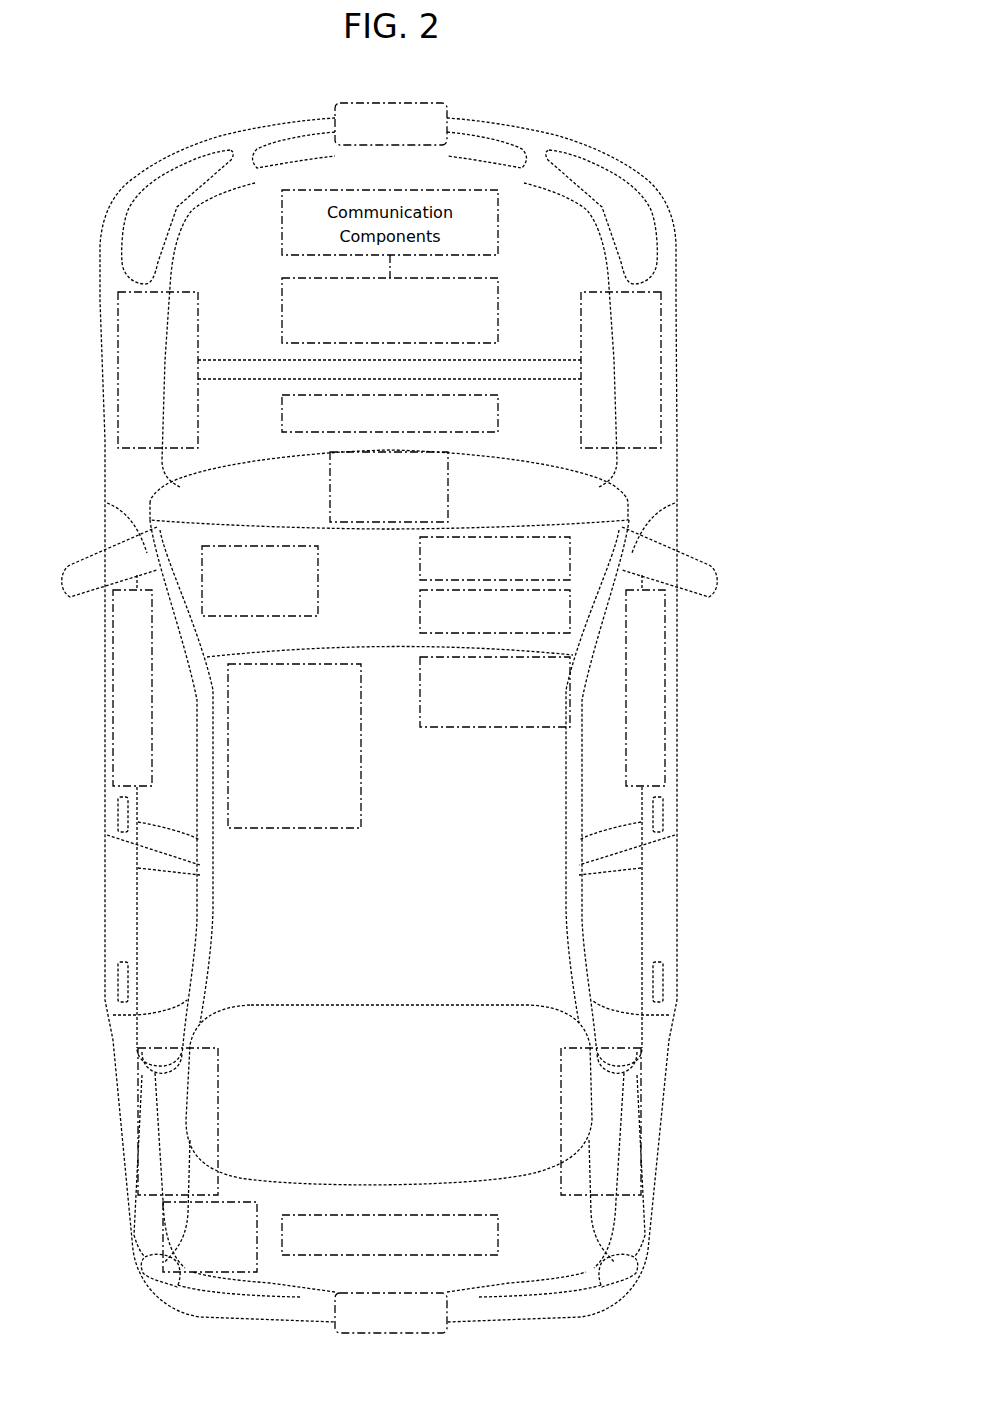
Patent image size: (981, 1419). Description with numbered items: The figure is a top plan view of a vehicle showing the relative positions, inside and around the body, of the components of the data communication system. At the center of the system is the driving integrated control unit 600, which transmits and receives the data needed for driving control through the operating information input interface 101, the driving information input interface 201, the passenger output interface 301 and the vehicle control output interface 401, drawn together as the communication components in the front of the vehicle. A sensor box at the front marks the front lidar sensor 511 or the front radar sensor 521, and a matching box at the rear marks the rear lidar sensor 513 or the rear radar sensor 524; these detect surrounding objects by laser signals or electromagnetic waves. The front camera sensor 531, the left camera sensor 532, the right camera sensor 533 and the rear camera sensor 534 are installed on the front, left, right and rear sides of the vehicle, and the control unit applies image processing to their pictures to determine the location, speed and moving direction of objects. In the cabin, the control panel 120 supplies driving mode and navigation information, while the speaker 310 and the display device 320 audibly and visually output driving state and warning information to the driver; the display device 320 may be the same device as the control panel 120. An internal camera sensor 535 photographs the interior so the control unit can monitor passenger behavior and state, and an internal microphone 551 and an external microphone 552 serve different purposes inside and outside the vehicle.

The operating information input interface 101 is at (390, 698).
The driving information input interface 201 is at (390, 698).
The passenger output interface 301 is at (390, 698).
The vehicle control output interface 401 is at (503, 218).
The front lidar sensor 511 is at (391, 96).
The front radar sensor 521 is at (390, 100).
The rear lidar sensor 513 is at (391, 1337).
The rear radar sensor 524 is at (390, 1335).
The driving integrated control unit 600 is at (498, 312).
The front camera sensor 531 is at (498, 413).
The control panel 120 is at (448, 490).
The internal camera sensor 535 is at (203, 562).
The speaker 310 is at (418, 559).
The display device 320 is at (418, 612).
The internal microphone 551 is at (490, 728).
The left camera sensor 532 is at (111, 692).
The right camera sensor 533 is at (667, 692).
The external microphone 552 is at (160, 1238).
The rear camera sensor 534 is at (498, 1236).